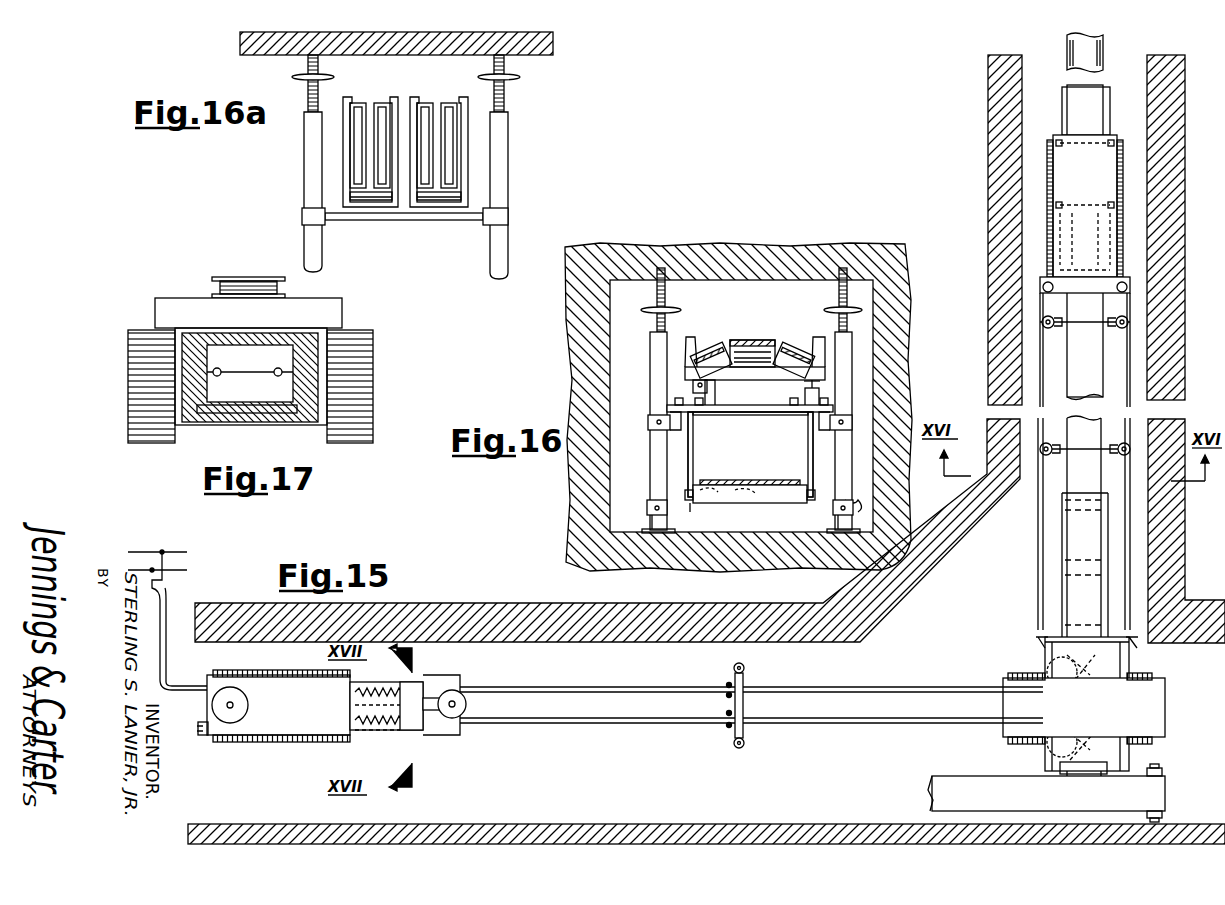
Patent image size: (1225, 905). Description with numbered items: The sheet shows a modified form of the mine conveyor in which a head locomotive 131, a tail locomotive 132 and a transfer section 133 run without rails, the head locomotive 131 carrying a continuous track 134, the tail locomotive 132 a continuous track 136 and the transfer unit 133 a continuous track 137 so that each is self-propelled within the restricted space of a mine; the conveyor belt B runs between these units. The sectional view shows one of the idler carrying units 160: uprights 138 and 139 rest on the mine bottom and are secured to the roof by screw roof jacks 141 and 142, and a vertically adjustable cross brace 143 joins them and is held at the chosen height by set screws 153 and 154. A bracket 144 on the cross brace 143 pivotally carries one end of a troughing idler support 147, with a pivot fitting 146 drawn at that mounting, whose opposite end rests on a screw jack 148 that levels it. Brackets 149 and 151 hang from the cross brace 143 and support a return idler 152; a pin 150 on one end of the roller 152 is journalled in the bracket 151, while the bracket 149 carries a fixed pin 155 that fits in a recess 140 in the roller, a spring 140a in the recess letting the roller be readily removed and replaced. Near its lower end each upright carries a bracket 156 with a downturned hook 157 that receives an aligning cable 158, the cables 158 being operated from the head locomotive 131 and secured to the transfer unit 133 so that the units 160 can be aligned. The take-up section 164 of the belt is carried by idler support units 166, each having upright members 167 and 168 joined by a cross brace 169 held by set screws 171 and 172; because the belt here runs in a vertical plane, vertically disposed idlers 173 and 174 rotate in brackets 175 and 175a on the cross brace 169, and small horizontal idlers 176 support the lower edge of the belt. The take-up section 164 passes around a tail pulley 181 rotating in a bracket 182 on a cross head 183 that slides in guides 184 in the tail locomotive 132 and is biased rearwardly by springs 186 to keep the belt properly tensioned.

In FIG. 15, the head locomotive 131 is at (1056, 179).
In FIG. 17, the tail locomotive 132 is at (192, 291).
In FIG. 15, the tail locomotive 132 is at (305, 723).
In FIG. 15, the transfer section 133 is at (1027, 678).
In FIG. 15, the continuous track 134 is at (1050, 208).
In FIG. 17, the continuous track 136 is at (143, 387).
In FIG. 15, the continuous track 136 is at (253, 747).
In FIG. 15, the continuous track 137 is at (1013, 746).
In FIG. 16, the upright 138 is at (660, 455).
In FIG. 16, the upright 139 is at (851, 360).
In FIG. 16, the recess 140 is at (714, 496).
In FIG. 16, the spring 140a is at (741, 496).
In FIG. 16, the screw roof jack 141 is at (665, 303).
In FIG. 16, the screw roof jack 142 is at (840, 293).
In FIG. 16, the cross brace 143 is at (737, 413).
In FIG. 16, the bracket 144 is at (709, 393).
In FIG. 16, the bracket 146 is at (693, 386).
In FIG. 16, the troughing idler support 147 is at (688, 368).
In FIG. 16, the screw jack 148 is at (803, 386).
In FIG. 16, the bracket 149 is at (692, 470).
In FIG. 16, the pin 150 is at (820, 490).
In FIG. 16, the bracket 151 is at (808, 457).
In FIG. 16, the return idler 152 is at (783, 488).
In FIG. 16, the set screw 153 is at (658, 422).
In FIG. 16, the set screw 154 is at (845, 423).
In FIG. 16, the fixed pin 155 is at (691, 504).
In FIG. 16, the bracket 156 is at (660, 497).
In FIG. 16, the downturned hook 157 is at (651, 505).
In FIG. 16, the aligning cable 158 is at (647, 512).
In FIG. 15, the aligning cable 158 is at (1127, 528).
In FIG. 15, the idler carrying unit 160 is at (1052, 337).
In FIG. 15, the take-up section 164 is at (623, 727).
In FIG. 16A, the idler support unit 166 is at (303, 138).
In FIG. 15, the idler support unit 166 is at (752, 680).
In FIG. 16A, the upright member 167 is at (310, 239).
In FIG. 16A, the upright member 168 is at (503, 252).
In FIG. 16A, the cross brace 169 is at (411, 221).
In FIG. 16A, the set screw 171 is at (297, 219).
In FIG. 16A, the set screw 172 is at (513, 218).
In FIG. 16A, the vertically disposed idler 173 is at (361, 165).
In FIG. 16A, the vertically disposed idler 174 is at (381, 142).
In FIG. 16A, the bracket 175 is at (392, 97).
In FIG. 16A, the bracket 175a is at (460, 97).
In FIG. 16A, the horizontal idler 176 is at (375, 202).
In FIG. 15, the tail pulley 181 is at (460, 697).
In FIG. 15, the bracket 182 is at (446, 688).
In FIG. 17, the cross head 183 is at (210, 412).
In FIG. 15, the cross head 183 is at (413, 690).
In FIG. 17, the guides 184 is at (312, 343).
In FIG. 15, the spring 186 is at (357, 697).
In FIG. 15, the pipe B is at (1093, 102).